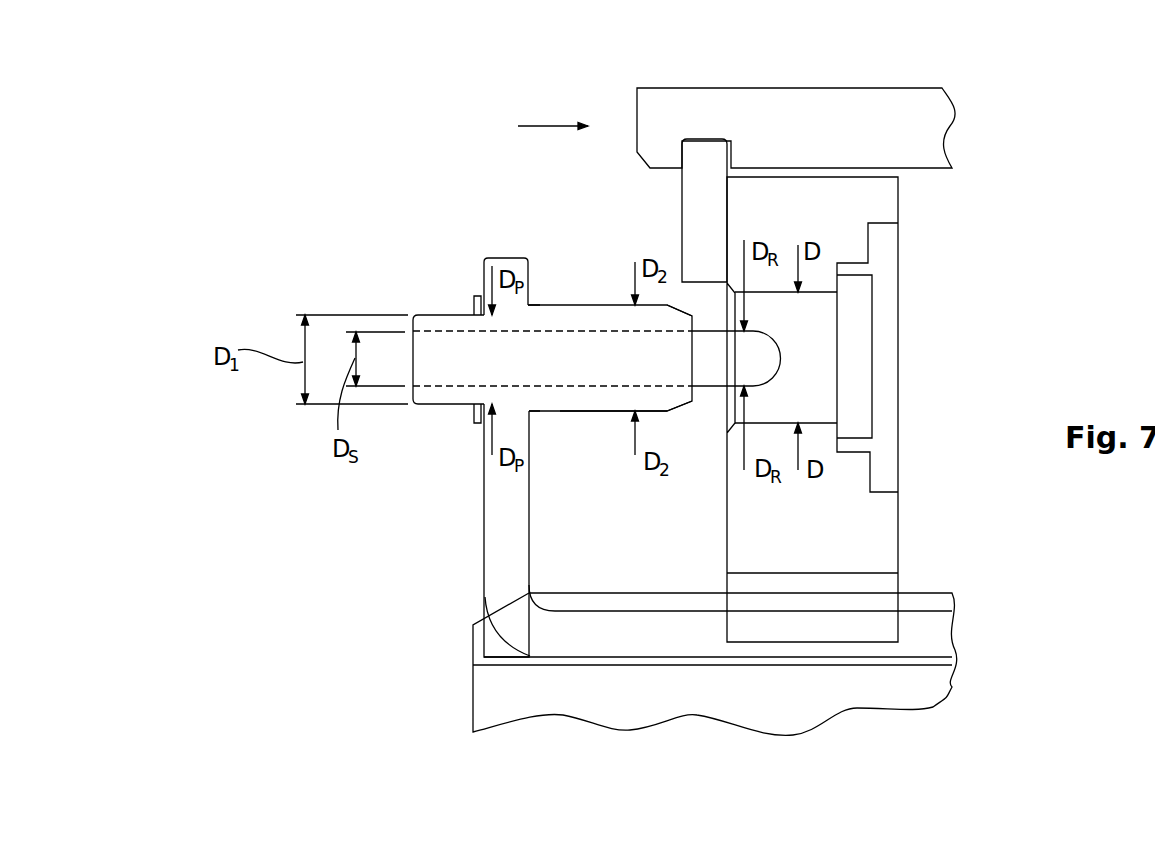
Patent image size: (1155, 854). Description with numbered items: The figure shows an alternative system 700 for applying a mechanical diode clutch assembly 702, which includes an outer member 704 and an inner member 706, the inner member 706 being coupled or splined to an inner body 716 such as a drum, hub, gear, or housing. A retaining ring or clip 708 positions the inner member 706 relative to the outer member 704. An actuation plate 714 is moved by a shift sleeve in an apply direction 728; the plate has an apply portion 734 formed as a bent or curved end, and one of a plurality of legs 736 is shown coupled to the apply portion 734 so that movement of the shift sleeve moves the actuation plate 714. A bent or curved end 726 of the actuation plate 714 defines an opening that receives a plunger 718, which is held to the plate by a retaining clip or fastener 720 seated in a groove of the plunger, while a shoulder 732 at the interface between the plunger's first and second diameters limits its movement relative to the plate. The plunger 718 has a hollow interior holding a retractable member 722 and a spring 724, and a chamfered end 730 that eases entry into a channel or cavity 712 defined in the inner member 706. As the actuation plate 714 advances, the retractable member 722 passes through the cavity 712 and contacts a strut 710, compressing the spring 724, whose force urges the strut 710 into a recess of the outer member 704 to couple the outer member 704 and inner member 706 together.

The alternative system 700 is at (303, 180).
The mechanical diode clutch assembly 702 is at (1042, 195).
The outer member 704 is at (820, 108).
The inner member 706 is at (845, 527).
The retaining ring or clip 708 is at (698, 193).
The strut 710 is at (860, 355).
The channel or cavity 712 is at (822, 337).
The actuation plate 714 is at (500, 518).
The inner body 716 is at (473, 647).
The plunger 718 is at (588, 353).
The retaining clip or fastener 720 is at (472, 300).
The retractable member 722 is at (737, 360).
The spring 724 is at (600, 385).
The bent or curved end 726 is at (480, 268).
The apply direction 728 is at (552, 125).
The chamfered end 730 is at (687, 308).
The shoulder 732 is at (530, 300).
The apply portion 734 is at (530, 556).
The leg 736 is at (600, 642).